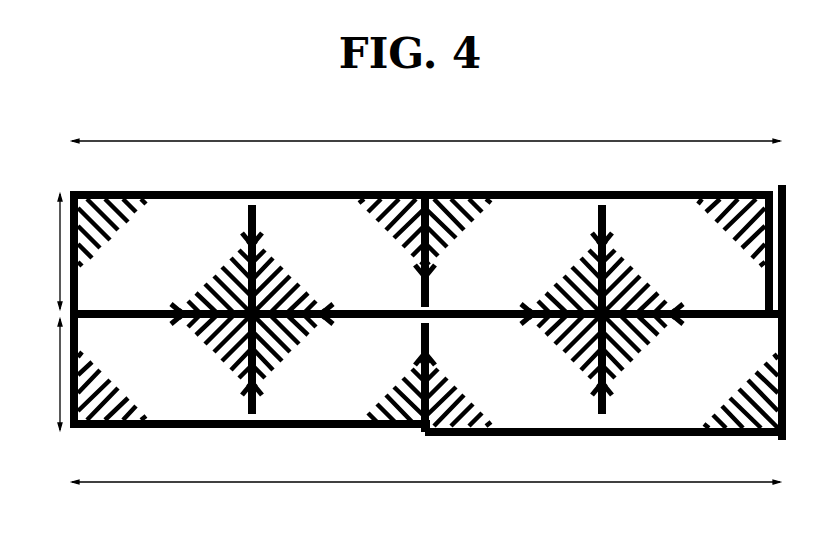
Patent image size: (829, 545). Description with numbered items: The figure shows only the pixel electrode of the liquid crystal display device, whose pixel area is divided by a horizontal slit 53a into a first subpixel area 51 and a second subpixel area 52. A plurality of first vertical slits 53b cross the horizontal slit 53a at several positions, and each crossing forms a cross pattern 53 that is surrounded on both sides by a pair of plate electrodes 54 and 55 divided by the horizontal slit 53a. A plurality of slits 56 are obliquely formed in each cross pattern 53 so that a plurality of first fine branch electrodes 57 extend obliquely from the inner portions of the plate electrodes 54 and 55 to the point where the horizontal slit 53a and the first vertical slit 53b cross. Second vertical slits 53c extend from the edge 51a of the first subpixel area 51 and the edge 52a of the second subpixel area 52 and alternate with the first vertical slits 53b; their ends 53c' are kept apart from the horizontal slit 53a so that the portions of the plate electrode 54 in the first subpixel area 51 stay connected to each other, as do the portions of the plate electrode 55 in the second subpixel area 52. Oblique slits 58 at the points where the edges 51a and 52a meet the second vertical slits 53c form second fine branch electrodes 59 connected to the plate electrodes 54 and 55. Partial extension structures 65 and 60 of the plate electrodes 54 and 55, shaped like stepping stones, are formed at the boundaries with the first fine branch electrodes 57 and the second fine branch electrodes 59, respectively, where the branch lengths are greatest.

The first subpixel area 51 is at (406, 217).
The second subpixel area 52 is at (409, 344).
The edge of the first subpixel area 51a is at (190, 192).
The edge of the second subpixel area 52a is at (212, 428).
The cross pattern 53 is at (258, 405).
The horizontal slit 53a is at (130, 318).
The first vertical slit 53b is at (250, 207).
The second vertical slit 53c is at (433, 297).
The end of the second vertical slit 53c' is at (459, 315).
The plate electrode 54 is at (312, 240).
The plate electrode 55 is at (325, 385).
The slit 56 is at (190, 302).
The first fine branch electrode 57 is at (222, 272).
The slit 58 is at (128, 208).
The second fine branch electrode 59 is at (118, 213).
The partial extension structure 60 is at (130, 240).
The partial extension structure 65 is at (196, 272).